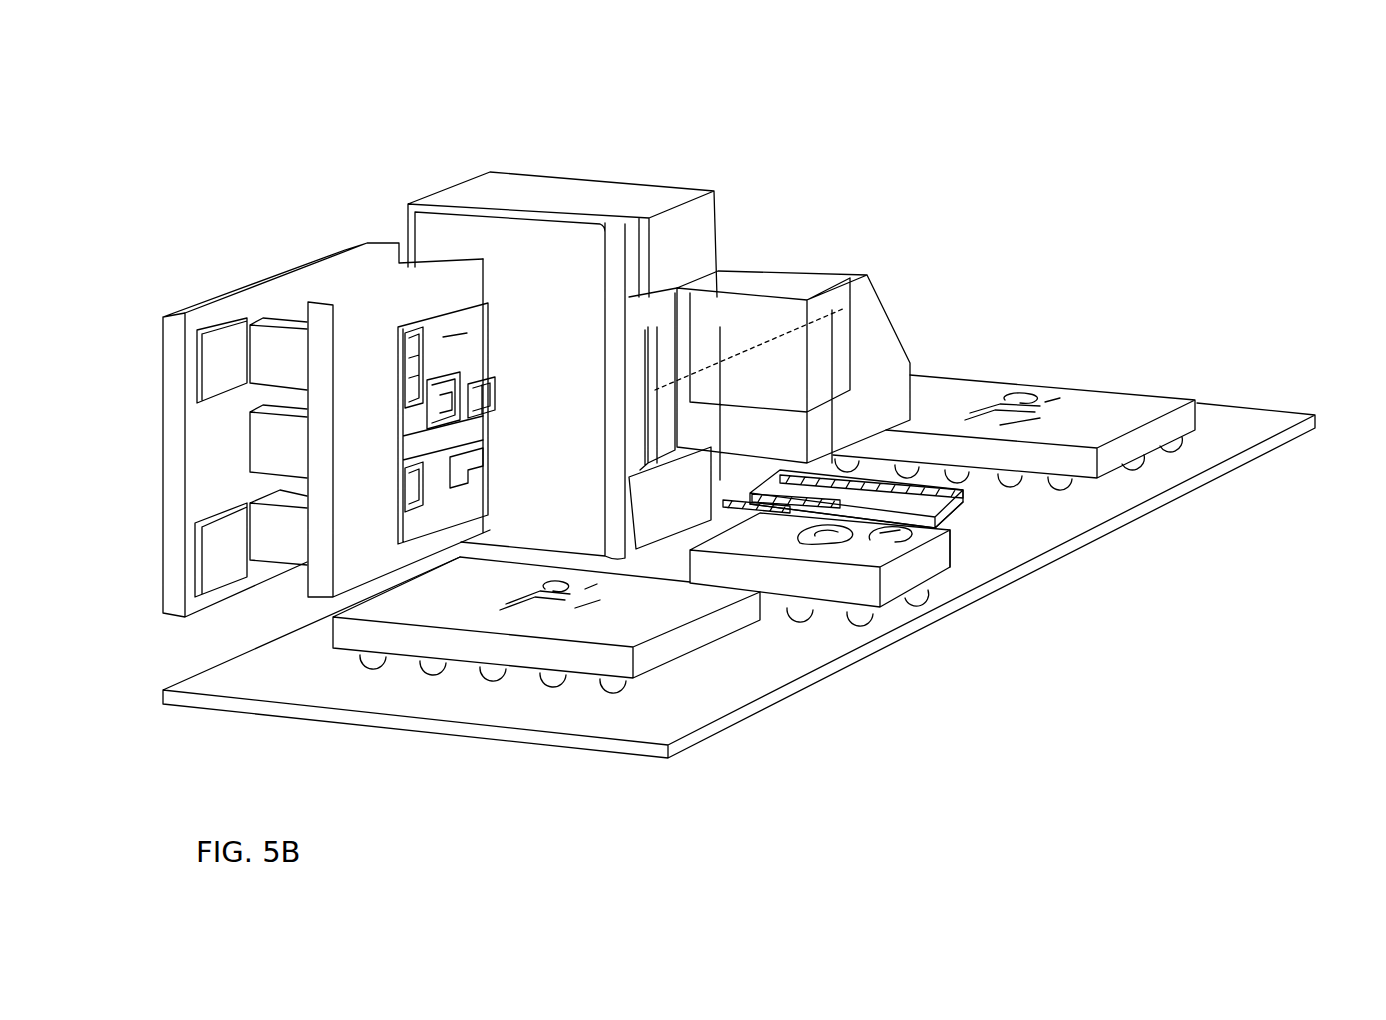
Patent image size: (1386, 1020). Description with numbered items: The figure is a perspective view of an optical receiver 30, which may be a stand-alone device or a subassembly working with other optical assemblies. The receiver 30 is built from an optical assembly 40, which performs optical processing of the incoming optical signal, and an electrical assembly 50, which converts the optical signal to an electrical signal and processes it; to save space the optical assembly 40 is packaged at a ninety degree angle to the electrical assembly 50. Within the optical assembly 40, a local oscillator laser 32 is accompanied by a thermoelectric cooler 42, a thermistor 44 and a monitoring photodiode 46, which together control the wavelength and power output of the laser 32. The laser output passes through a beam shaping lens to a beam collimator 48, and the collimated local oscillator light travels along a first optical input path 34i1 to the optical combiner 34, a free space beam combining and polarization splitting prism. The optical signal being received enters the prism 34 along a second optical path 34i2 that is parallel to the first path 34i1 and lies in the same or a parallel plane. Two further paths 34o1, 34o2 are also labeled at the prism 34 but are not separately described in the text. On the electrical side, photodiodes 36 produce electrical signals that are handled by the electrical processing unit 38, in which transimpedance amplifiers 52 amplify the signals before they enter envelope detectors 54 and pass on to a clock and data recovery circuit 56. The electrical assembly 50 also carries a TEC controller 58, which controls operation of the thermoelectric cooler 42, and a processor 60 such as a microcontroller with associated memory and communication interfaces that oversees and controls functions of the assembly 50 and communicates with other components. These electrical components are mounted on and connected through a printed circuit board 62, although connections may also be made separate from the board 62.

The optical receiver 30 is at (464, 794).
The local oscillator laser 32 is at (477, 380).
The optical combiner/splitter 34 is at (778, 268).
The first optical input path 34i1 is at (657, 325).
The second optical path 34i2 is at (717, 352).
The first output optical signal 34o1 is at (731, 462).
The second output optical signal 34o2 is at (820, 460).
The photodiodes 36 is at (857, 513).
The electrical processing unit 38 is at (939, 252).
The optical assembly 40 is at (194, 198).
The thermoelectric cooler 42 is at (269, 332).
The thermistor 44 is at (481, 346).
The monitoring photodiode 46 is at (405, 335).
The beam collimator 48 is at (565, 164).
The electrical assembly 50 is at (1080, 718).
The transimpedance amplifier 52 is at (963, 500).
The envelope detector 54 is at (678, 640).
The clock and data recovery circuit 56 is at (1171, 392).
The TEC controller 58 is at (382, 647).
The processor 60 is at (950, 566).
The printed circuit board 62 is at (1282, 437).